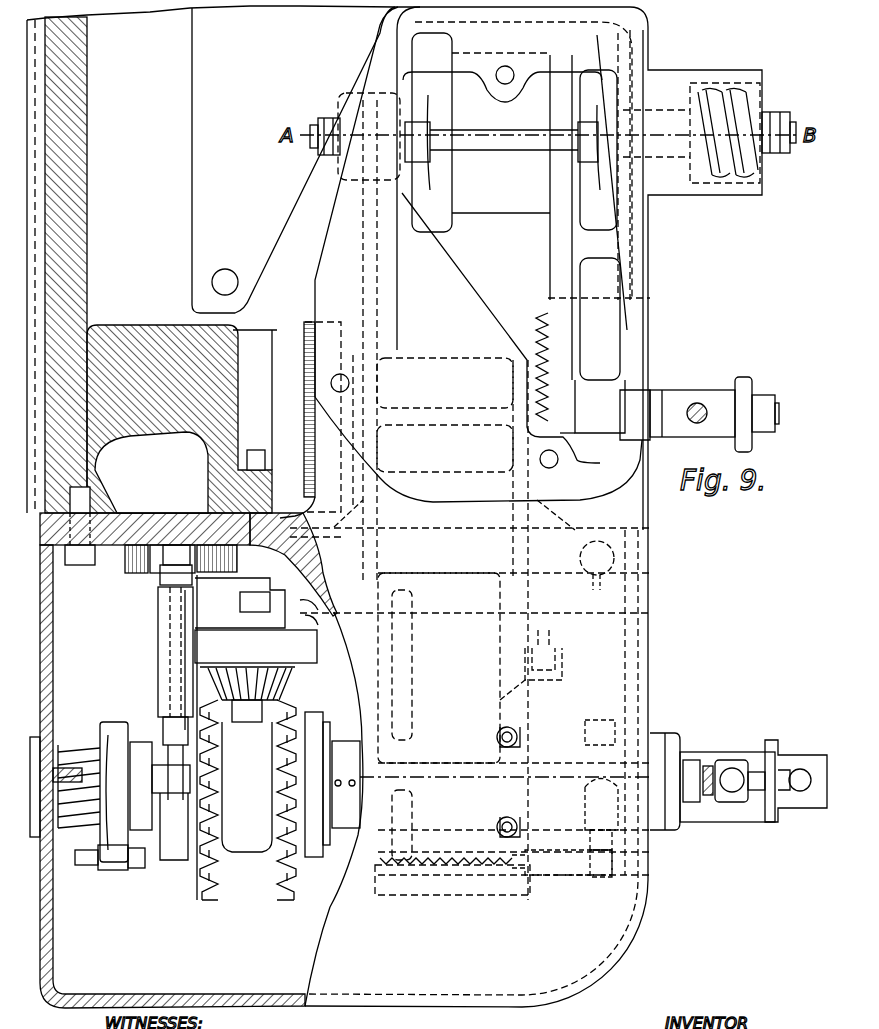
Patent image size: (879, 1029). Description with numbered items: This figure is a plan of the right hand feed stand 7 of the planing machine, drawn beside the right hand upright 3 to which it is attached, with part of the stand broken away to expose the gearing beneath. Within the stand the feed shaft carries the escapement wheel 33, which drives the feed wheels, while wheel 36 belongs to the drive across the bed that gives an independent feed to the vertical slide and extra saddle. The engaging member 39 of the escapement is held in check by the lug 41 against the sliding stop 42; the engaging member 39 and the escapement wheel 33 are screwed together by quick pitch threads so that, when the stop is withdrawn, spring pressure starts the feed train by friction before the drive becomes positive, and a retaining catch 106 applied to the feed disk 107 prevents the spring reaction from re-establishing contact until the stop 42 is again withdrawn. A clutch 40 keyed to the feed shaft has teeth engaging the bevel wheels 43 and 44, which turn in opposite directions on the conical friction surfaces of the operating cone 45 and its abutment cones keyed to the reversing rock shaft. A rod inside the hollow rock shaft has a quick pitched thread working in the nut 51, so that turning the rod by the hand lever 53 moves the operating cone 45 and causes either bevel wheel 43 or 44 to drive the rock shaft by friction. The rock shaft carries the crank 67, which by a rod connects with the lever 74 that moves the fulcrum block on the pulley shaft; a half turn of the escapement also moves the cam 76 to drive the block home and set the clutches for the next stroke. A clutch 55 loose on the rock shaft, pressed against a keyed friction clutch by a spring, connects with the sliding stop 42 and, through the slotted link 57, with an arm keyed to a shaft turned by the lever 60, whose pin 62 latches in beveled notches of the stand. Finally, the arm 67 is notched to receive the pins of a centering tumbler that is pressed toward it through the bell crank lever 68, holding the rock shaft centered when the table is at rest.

The right hand upright 3 is at (212, 507).
The right hand feed stand 7 is at (526, 507).
The escapement wheel 33 is at (181, 559).
The wheel 36 is at (334, 375).
The engaging member of the escapement 39 is at (235, 737).
The clutch 40 is at (256, 646).
The lug 41 is at (318, 625).
The sliding stop 42 is at (175, 672).
The bevel wheel 43 is at (386, 698).
The bevel wheel 44 is at (160, 801).
The operating cone 45 is at (248, 783).
The nut 51 is at (712, 781).
The hand lever 53 is at (575, 420).
The clutch 55 is at (93, 792).
The slotted link 57 is at (90, 870).
The lever 60 is at (796, 781).
The pin 62 is at (787, 780).
The crank (arm) 67 is at (512, 782).
The bell crank lever 68 is at (536, 655).
The lever 74 is at (514, 132).
The cam 76 is at (502, 133).
The retaining catch 106 is at (496, 862).
The feed disk 107 is at (452, 880).